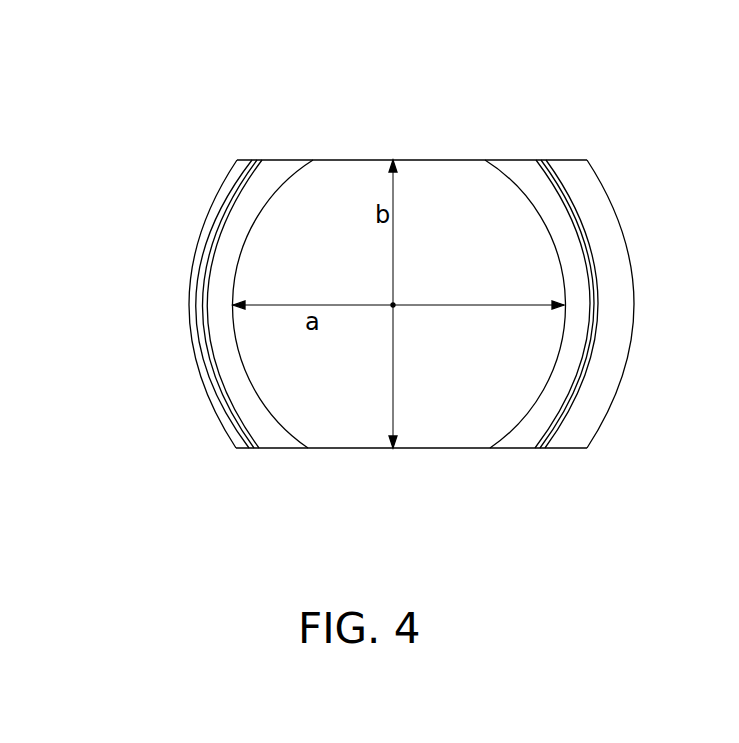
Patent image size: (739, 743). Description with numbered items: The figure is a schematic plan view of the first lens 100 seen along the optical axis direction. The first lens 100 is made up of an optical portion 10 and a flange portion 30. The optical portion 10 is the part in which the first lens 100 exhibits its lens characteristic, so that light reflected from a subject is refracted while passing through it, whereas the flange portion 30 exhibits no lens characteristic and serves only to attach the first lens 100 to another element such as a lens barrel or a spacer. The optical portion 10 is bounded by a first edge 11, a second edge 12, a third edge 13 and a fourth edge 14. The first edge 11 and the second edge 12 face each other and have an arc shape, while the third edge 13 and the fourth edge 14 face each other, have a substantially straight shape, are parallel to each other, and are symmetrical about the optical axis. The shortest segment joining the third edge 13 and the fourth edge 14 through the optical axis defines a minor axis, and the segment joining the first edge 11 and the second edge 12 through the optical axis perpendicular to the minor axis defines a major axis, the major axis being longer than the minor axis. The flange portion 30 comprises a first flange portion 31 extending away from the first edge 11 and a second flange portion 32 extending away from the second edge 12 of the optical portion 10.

The first lens 100 is at (630, 59).
The optical portion 10 is at (399, 334).
The first edge 11 is at (220, 329).
The second edge 12 is at (578, 327).
The third edge 13 is at (355, 450).
The fourth edge 14 is at (378, 158).
The flange portion 30 is at (366, 244).
The first flange portion 31 is at (215, 273).
The second flange portion 32 is at (580, 271).